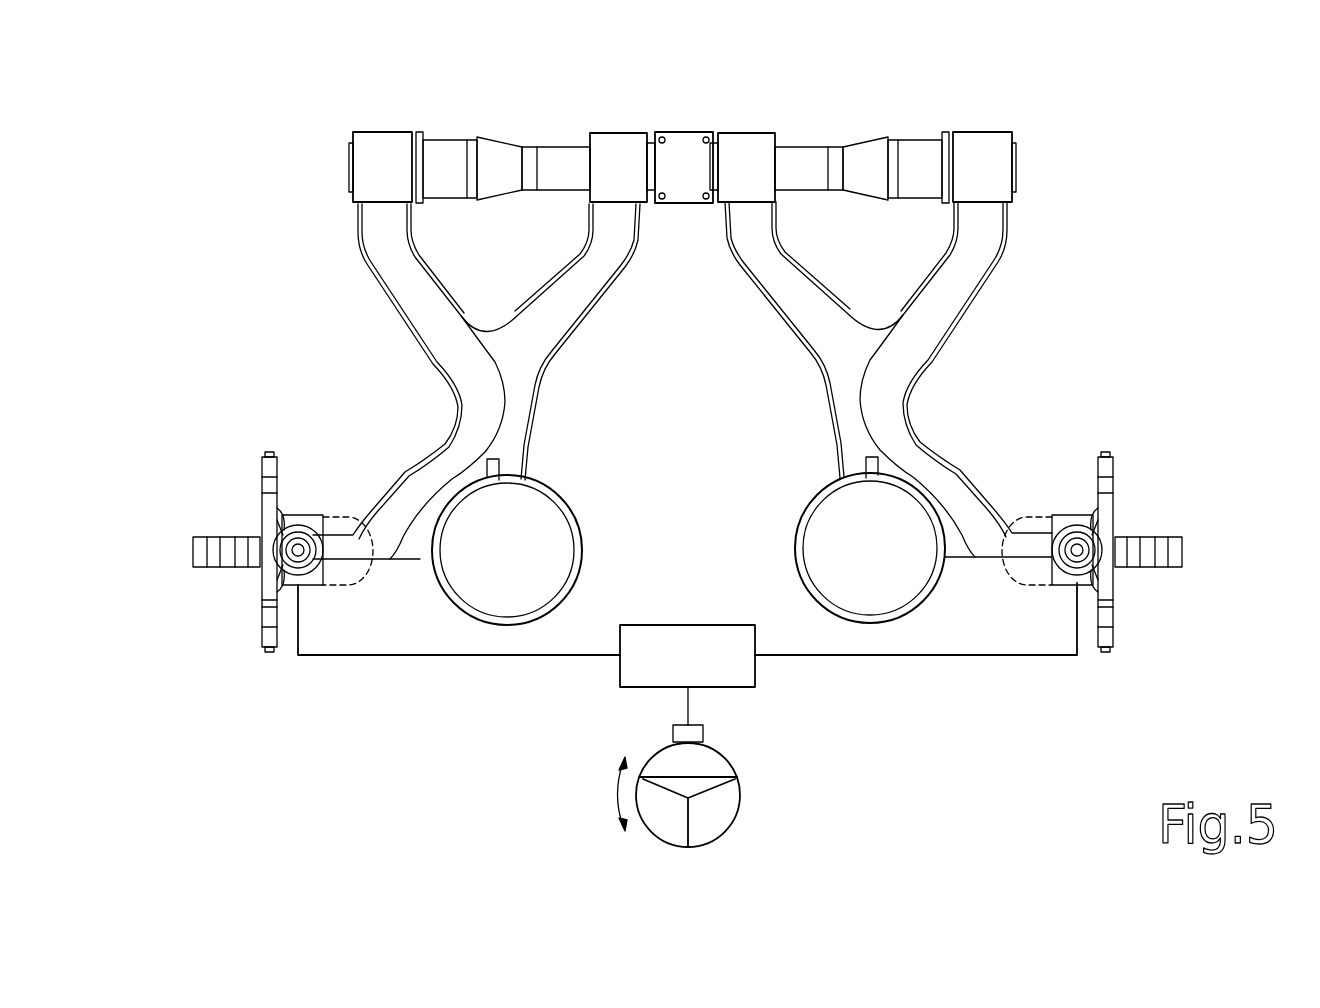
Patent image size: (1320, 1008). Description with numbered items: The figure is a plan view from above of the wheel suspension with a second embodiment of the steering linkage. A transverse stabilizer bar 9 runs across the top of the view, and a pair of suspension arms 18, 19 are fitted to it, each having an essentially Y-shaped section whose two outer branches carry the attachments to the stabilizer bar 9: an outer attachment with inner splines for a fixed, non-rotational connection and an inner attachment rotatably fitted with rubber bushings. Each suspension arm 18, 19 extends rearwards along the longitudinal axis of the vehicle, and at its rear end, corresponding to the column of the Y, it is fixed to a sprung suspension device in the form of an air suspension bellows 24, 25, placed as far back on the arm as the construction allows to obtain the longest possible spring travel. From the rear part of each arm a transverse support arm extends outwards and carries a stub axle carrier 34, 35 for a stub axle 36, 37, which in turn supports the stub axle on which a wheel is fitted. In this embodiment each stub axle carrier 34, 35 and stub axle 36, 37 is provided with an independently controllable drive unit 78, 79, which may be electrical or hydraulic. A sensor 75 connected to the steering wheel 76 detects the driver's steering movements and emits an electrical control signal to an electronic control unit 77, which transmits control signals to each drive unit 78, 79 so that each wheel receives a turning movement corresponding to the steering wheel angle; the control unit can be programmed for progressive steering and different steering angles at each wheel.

The stabilizer bar 9 is at (558, 152).
The suspension arm 18 is at (815, 345).
The suspension arm 19 is at (517, 348).
The air suspension bellows 24 is at (848, 557).
The air suspension bellows 25 is at (483, 560).
The stub axle carrier 34 is at (1113, 537).
The stub axle carrier 35 is at (260, 537).
The stub axle 36 is at (1113, 603).
The stub axle 37 is at (262, 605).
The sensor 75 is at (705, 732).
The steering wheel 76 is at (740, 797).
The electronic control unit 77 is at (662, 670).
The drive unit 78 is at (1066, 500).
The drive unit 79 is at (309, 500).